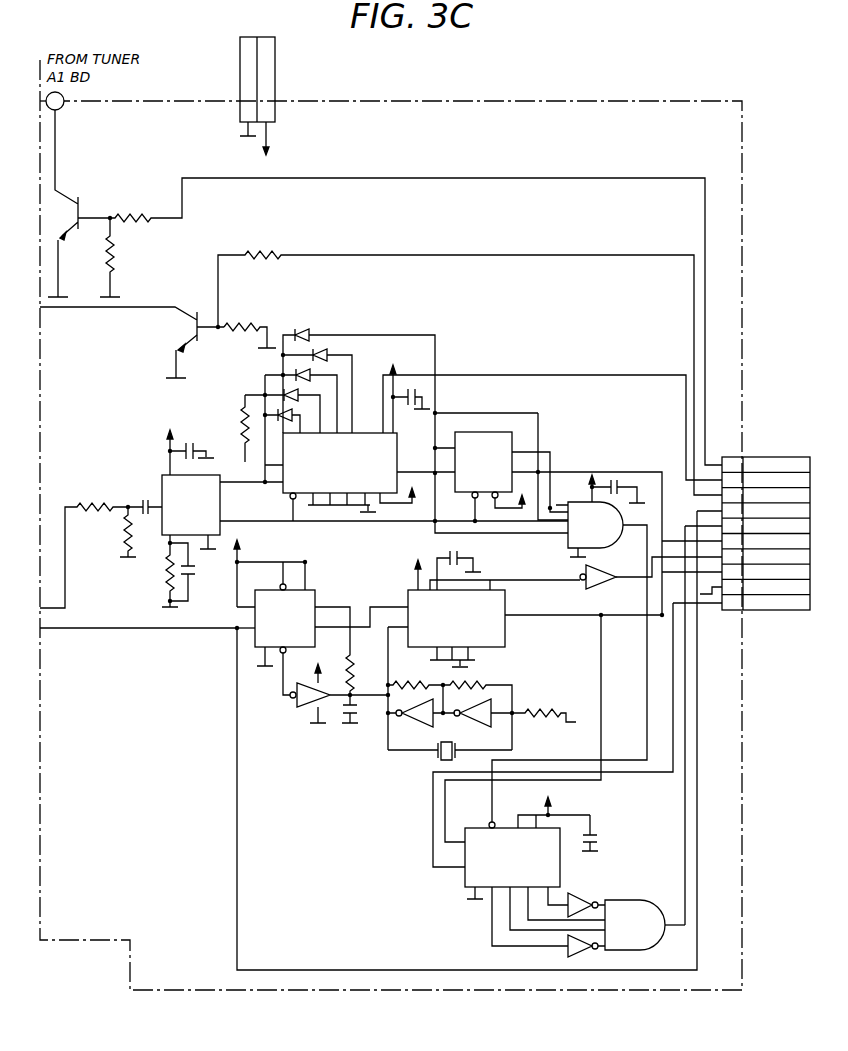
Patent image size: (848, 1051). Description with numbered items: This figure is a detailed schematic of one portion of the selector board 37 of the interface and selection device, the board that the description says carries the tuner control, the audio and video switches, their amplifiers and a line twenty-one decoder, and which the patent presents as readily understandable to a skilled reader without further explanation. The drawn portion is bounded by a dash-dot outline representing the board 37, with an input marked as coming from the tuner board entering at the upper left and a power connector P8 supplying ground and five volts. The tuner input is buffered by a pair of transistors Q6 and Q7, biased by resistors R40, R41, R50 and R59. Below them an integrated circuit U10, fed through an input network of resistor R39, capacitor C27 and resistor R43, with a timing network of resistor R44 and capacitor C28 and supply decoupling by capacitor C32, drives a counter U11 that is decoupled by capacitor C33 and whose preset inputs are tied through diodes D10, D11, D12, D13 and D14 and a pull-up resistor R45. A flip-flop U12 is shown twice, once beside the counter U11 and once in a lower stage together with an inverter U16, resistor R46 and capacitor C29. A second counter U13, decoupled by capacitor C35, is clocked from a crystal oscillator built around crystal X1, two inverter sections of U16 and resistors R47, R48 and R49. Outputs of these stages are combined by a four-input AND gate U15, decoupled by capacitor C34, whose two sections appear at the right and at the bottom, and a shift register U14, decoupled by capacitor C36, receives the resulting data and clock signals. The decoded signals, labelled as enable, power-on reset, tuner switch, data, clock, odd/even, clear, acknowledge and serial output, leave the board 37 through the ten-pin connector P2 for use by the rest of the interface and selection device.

The selector board 37 is at (600, 102).
The power connector P8 is at (243, 101).
The interface connector P2 is at (425, 701).
The transistor 2N2222 Q6 is at (78, 203).
The transistor 2N2222 Q7 is at (132, 342).
The resistor 22K R40 is at (400, 321).
The resistor 10K R41 is at (127, 257).
The resistor 10K R50 is at (250, 317).
The resistor 2.2K R59 is at (470, 349).
The integrated circuit 1881 U10 is at (352, 491).
The counter LS161 U11 is at (492, 433).
The flip-flop LS74 U12 is at (447, 554).
The counter LS193 U13 is at (526, 693).
The shift register LS164 U14 is at (533, 865).
The AND gate LS21 U15 is at (587, 704).
The inverter LS14 U16 is at (500, 763).
The capacitor .1 C27 is at (136, 496).
The capacitor .01 C28 is at (198, 572).
The capacitor 220 C29 is at (364, 704).
The capacitor .01 C32 is at (187, 434).
The capacitor .01 C33 is at (413, 395).
The capacitor .01 C34 is at (619, 487).
The capacitor .01 C35 is at (471, 568).
The capacitor .01 C36 is at (606, 837).
The resistor 680 R39 is at (84, 539).
The resistor 1K R43 is at (110, 532).
The resistor 680K R44 is at (152, 574).
The resistor 4.7K R45 is at (234, 428).
The resistor 1K R46 is at (352, 652).
The resistor 1.8K R47 is at (415, 679).
The resistor 1.8K R48 is at (477, 709).
The resistor 2.2K R49 is at (544, 701).
The diode D10 is at (425, 425).
The diode D11 is at (317, 386).
The diode D12 is at (307, 396).
The diode D13 is at (303, 406).
The diode D14 is at (297, 416).
The crystal 4.0 MHz X1 is at (450, 757).